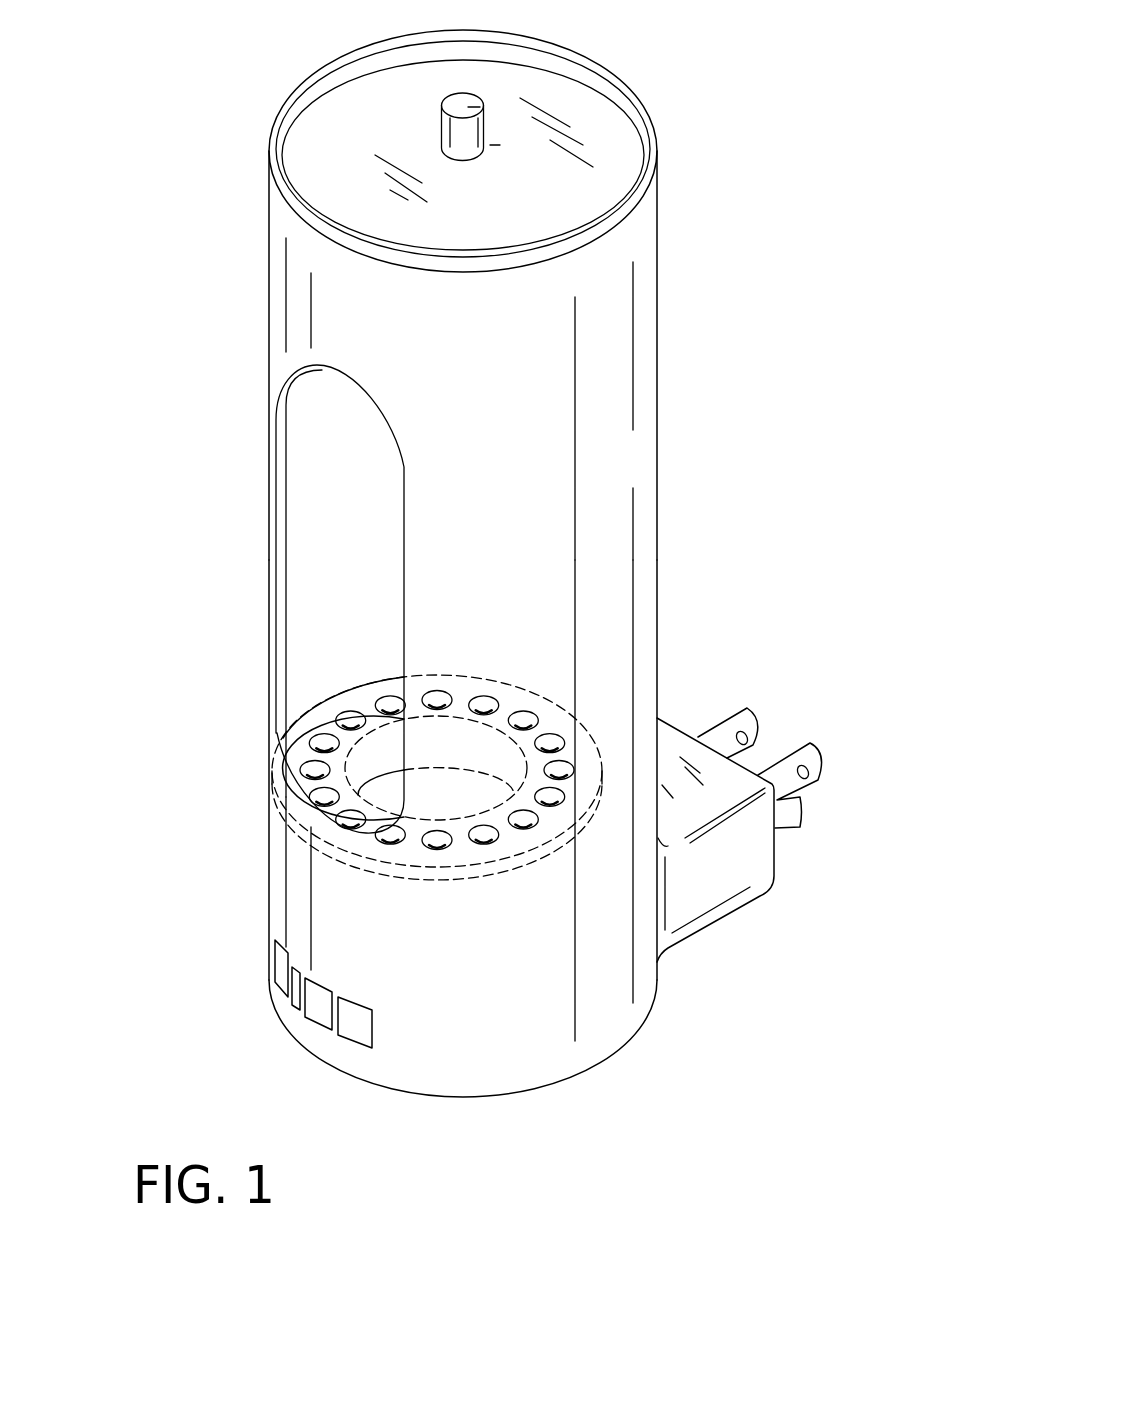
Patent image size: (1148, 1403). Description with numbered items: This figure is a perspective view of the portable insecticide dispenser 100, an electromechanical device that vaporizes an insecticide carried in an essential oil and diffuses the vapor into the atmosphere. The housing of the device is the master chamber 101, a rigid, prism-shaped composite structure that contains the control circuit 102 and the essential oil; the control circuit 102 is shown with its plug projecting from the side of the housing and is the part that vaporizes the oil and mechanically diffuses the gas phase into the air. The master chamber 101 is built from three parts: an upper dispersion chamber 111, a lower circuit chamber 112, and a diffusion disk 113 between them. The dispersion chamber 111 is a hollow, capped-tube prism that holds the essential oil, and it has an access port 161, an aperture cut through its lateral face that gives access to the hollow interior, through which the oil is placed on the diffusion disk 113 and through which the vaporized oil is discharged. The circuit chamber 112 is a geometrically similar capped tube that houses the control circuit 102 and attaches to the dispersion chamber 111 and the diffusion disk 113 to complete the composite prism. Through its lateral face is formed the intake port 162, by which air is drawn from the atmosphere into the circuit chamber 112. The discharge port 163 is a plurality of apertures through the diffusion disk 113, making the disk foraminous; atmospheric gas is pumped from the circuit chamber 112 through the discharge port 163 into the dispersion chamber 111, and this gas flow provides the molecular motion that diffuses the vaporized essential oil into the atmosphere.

The portable insecticide dispenser 100 is at (752, 101).
The master chamber 101 is at (657, 231).
The control circuit 102 is at (728, 712).
The dispersion chamber 111 is at (268, 249).
The circuit chamber 112 is at (269, 864).
The diffusion disk 113 is at (584, 728).
The access port 161 is at (376, 497).
The intake port 162 is at (372, 1010).
The discharge port 163 is at (483, 700).